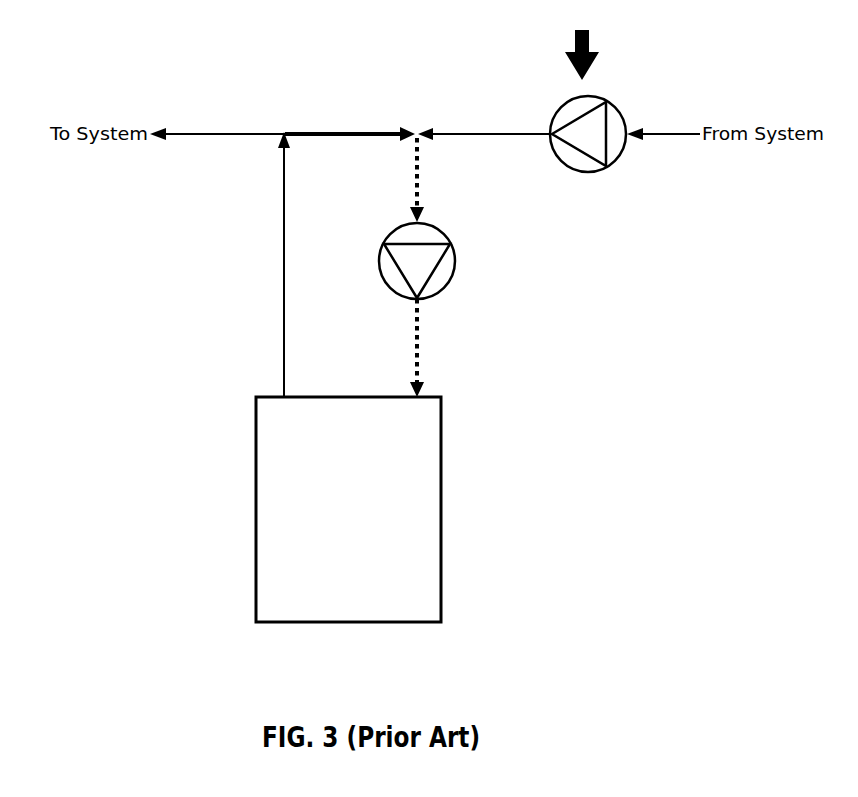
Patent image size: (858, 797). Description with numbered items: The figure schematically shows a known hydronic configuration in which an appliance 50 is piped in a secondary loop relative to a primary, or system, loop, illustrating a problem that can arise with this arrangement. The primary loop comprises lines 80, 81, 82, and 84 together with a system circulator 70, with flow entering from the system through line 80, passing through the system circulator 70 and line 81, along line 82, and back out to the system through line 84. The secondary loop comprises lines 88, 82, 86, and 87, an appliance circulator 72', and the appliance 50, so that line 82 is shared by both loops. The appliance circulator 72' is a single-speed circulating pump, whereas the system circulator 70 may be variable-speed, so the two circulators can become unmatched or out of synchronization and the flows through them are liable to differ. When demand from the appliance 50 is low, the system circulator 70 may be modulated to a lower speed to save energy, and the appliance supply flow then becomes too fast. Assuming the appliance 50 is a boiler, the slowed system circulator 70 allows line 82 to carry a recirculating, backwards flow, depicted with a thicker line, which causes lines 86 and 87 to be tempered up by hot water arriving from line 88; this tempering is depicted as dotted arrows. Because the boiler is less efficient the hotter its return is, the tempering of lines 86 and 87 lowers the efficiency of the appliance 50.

The appliance 50 is at (348, 509).
The system circulator 70 is at (599, 96).
The appliance circulator 72' is at (448, 251).
The line 80 is at (671, 133).
The line 81 is at (448, 132).
The line 82 is at (345, 132).
The line 84 is at (182, 132).
The line 86 is at (419, 177).
The line 87 is at (421, 382).
The line 88 is at (284, 184).